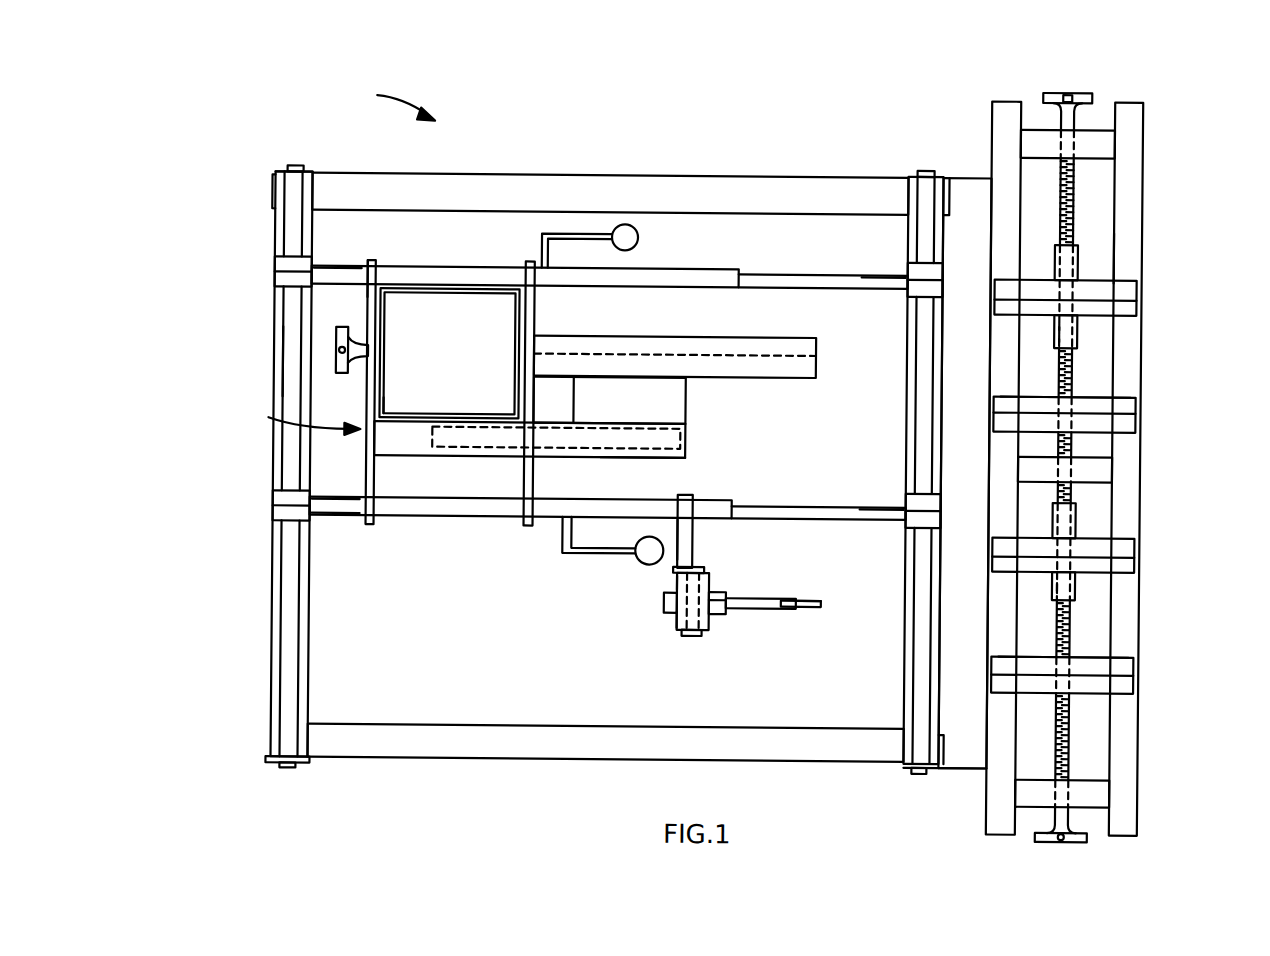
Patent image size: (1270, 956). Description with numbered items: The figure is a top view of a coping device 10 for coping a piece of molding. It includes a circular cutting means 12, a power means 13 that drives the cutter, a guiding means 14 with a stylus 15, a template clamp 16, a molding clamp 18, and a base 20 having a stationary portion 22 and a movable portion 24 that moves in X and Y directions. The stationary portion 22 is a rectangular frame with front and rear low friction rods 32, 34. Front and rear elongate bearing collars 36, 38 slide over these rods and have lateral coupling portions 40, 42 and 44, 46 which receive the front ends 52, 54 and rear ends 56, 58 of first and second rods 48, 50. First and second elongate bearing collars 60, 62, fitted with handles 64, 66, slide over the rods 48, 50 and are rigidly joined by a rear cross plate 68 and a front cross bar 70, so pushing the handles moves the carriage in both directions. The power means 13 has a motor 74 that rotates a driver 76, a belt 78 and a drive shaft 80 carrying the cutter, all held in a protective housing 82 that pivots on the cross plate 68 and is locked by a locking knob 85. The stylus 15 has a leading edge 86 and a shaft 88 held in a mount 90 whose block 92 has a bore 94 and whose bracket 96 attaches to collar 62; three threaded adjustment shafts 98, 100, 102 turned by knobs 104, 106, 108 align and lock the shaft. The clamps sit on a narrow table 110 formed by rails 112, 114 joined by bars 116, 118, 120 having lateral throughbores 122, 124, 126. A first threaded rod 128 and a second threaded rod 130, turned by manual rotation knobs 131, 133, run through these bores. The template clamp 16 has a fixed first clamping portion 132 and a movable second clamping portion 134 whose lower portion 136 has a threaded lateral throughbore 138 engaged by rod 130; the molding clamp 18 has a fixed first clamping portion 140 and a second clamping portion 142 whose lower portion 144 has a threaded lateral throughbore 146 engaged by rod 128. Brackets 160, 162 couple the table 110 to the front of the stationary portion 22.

The coping device 10 is at (385, 101).
The circular cutting means 12 is at (818, 356).
The power means 13 is at (385, 405).
The guiding means 14 is at (736, 593).
The stylus 15 is at (802, 602).
The template clamp 16 is at (1135, 565).
The molding clamp 18 is at (1135, 307).
The base 20 is at (284, 172).
The stationary portion 22 is at (855, 186).
The movable portion 24 is at (295, 416).
The front low friction rod 32 is at (912, 693).
The rear low friction rod 34 is at (290, 628).
The front elongate bearing collar 36 is at (926, 325).
The rear elongate bearing collar 38 is at (290, 320).
The lateral coupling portion 40 is at (912, 270).
The lateral coupling portion 42 is at (900, 510).
The lateral coupling portion 44 is at (292, 270).
The lateral coupling portion 46 is at (290, 502).
The first low friction rod 48 is at (355, 270).
The second low friction rod 50 is at (342, 522).
The front end 52 is at (888, 280).
The front end 54 is at (900, 522).
The rear end 56 is at (336, 276).
The rear end 58 is at (325, 522).
The first elongate bearing collar 60 is at (486, 272).
The second elongate bearing collar 62 is at (448, 520).
The handle 64 is at (637, 238).
The handle 66 is at (640, 560).
The rear cross plate 68 is at (372, 528).
The front cross bar 70 is at (525, 527).
The motor 74 is at (474, 352).
The driver 76 is at (440, 452).
The belt 78 is at (598, 458).
The drive shaft 80 is at (690, 408).
The protective housing 82 is at (500, 460).
The locking knob 85 is at (340, 330).
The leading edge 86 is at (826, 607).
The shaft 88 is at (768, 610).
The mount 90 is at (677, 535).
The block 92 is at (697, 597).
The bore 94 is at (718, 616).
The bracket 96 is at (684, 508).
The threaded adjustment shaft 98 is at (674, 614).
The threaded adjustment shaft 100 is at (685, 637).
The threaded adjustment shaft 102 is at (680, 580).
The knob 104 is at (668, 604).
The knob 106 is at (695, 637).
The knob 108 is at (700, 567).
The table 110 is at (1130, 255).
The rail 112 is at (994, 108).
The rail 114 is at (1132, 115).
The bar 116 is at (1105, 148).
The bar 118 is at (1100, 478).
The bar 120 is at (1100, 800).
The lateral throughbore 122 is at (1078, 140).
The lateral throughbore 124 is at (1080, 470).
The lateral throughbore 126 is at (1075, 790).
The first threaded rod 128 is at (1080, 220).
The second threaded rod 130 is at (1068, 740).
The manual rotation knob 131 is at (1070, 92).
The fixed first clamping portion 132 is at (1130, 688).
The manual rotation knob 133 is at (1063, 845).
The movable second clamping portion 134 is at (1130, 548).
The lower portion 136 is at (1085, 595).
The threaded lateral throughbore 138 is at (1082, 585).
The fixed first clamping portion 140 is at (1130, 425).
The second clamping portion 142 is at (1130, 290).
The lower portion 144 is at (1082, 335).
The threaded lateral throughbore 146 is at (1085, 340).
The bracket 160 is at (965, 176).
The bracket 162 is at (958, 770).